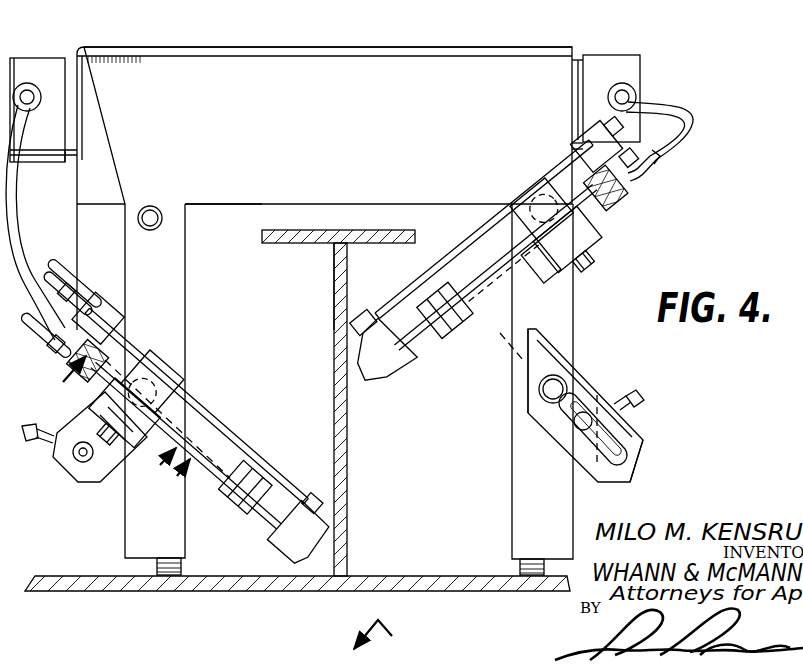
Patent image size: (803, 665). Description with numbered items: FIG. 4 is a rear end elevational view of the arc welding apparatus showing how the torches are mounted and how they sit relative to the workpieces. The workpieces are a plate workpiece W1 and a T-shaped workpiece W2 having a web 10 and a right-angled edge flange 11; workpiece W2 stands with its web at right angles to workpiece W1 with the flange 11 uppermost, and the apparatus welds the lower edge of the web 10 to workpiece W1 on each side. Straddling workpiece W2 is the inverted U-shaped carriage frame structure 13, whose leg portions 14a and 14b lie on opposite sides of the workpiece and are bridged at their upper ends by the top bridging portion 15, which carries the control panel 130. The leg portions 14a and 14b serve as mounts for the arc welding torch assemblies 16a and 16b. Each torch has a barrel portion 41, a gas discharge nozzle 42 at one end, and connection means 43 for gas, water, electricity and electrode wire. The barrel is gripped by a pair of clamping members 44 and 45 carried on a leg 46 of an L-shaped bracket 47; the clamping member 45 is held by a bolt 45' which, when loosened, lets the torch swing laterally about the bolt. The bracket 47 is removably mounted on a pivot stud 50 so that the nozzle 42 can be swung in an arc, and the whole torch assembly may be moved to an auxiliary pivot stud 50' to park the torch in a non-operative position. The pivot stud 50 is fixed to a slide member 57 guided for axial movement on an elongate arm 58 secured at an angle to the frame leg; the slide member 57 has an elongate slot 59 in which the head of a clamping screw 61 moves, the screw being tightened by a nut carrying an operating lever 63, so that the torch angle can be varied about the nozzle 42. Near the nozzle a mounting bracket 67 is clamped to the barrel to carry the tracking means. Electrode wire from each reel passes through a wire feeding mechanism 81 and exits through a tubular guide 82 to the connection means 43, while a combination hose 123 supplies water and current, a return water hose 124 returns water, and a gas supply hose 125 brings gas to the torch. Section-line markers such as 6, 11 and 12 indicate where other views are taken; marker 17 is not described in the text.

The web 10 is at (333, 356).
The right-angled edge flange 11 is at (284, 243).
The section line 12 is at (101, 431).
The carriage frame structure 13 is at (76, 176).
The leg portion 14a is at (187, 301).
The leg portion 14b is at (511, 470).
The top bridging portion 15 is at (246, 208).
The arc welding torch assembly 16a is at (207, 494).
The arc welding torch assembly 16b is at (505, 286).
The post foot 17 is at (158, 580).
The barrel portion 41 is at (468, 272).
The gas discharge nozzle 42 is at (375, 384).
The connection means 43 is at (616, 208).
The barrel gripping clamping member 44 is at (140, 368).
The barrel gripping clamping member 45 is at (103, 457).
The bolt 45' is at (348, 326).
The leg 46 is at (576, 261).
The L-shaped bracket 47 is at (540, 273).
The pivot stud 50 is at (374, 290).
The auxiliary pivot stud 50' is at (527, 191).
The slide member 57 is at (637, 442).
The elongate arm 58 is at (633, 415).
The elongate slot 59 is at (640, 462).
The clamping screw 61 is at (586, 411).
The manually engageable operating lever 63 is at (639, 396).
The mounting bracket 67 is at (447, 346).
The wire feeding mechanism 81 is at (62, 56).
The tubular guide 82 is at (18, 249).
The combination hose 123 is at (657, 179).
The return water hose 124 is at (611, 128).
The gas supply hose 125 is at (630, 130).
The control panel 130 is at (476, 46).
The workpiece W1 is at (244, 589).
The workpiece W2 is at (330, 312).
The section line 6 is at (276, 560).